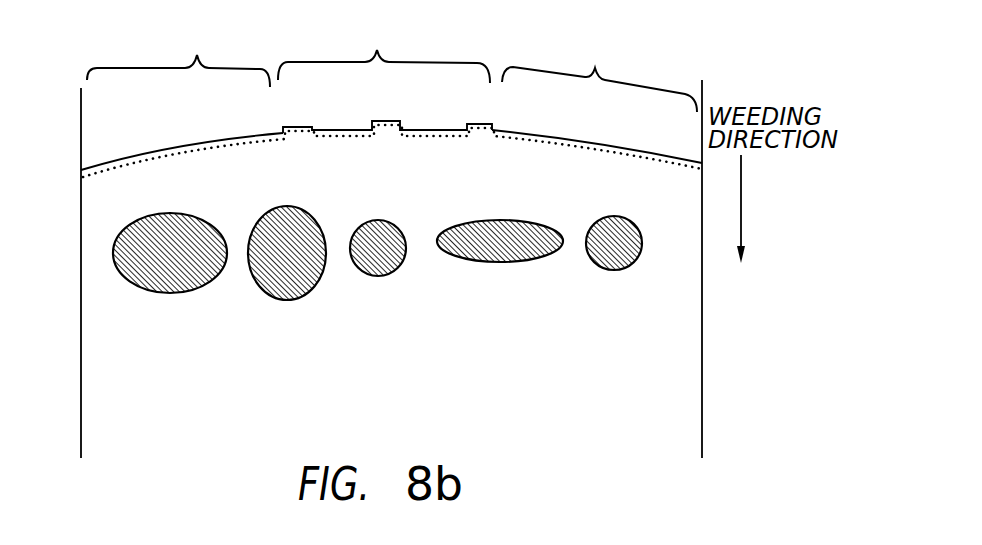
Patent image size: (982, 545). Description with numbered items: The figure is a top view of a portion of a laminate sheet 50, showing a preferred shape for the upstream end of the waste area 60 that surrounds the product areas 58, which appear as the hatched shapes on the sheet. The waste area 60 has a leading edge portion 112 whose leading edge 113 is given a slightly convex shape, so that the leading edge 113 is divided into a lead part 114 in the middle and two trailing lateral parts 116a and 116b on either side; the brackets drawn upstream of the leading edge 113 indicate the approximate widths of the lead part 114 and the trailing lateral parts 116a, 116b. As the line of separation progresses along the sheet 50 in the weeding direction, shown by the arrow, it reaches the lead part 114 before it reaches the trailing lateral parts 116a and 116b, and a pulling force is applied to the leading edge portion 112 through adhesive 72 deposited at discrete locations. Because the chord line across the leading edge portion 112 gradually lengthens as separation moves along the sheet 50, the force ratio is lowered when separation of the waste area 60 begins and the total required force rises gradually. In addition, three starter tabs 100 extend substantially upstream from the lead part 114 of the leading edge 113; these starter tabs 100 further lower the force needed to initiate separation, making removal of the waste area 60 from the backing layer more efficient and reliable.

The laminate sheet 50 is at (88, 135).
The product areas 58 is at (592, 267).
The waste area 60 is at (98, 398).
The adhesive 72 is at (558, 142).
The starter tabs 100 is at (467, 126).
The leading edge portion 112 is at (623, 152).
The leading edge 113 is at (177, 145).
The lead part 114 is at (384, 52).
The trailing lateral part 116a is at (178, 57).
The trailing lateral part 116b is at (599, 76).